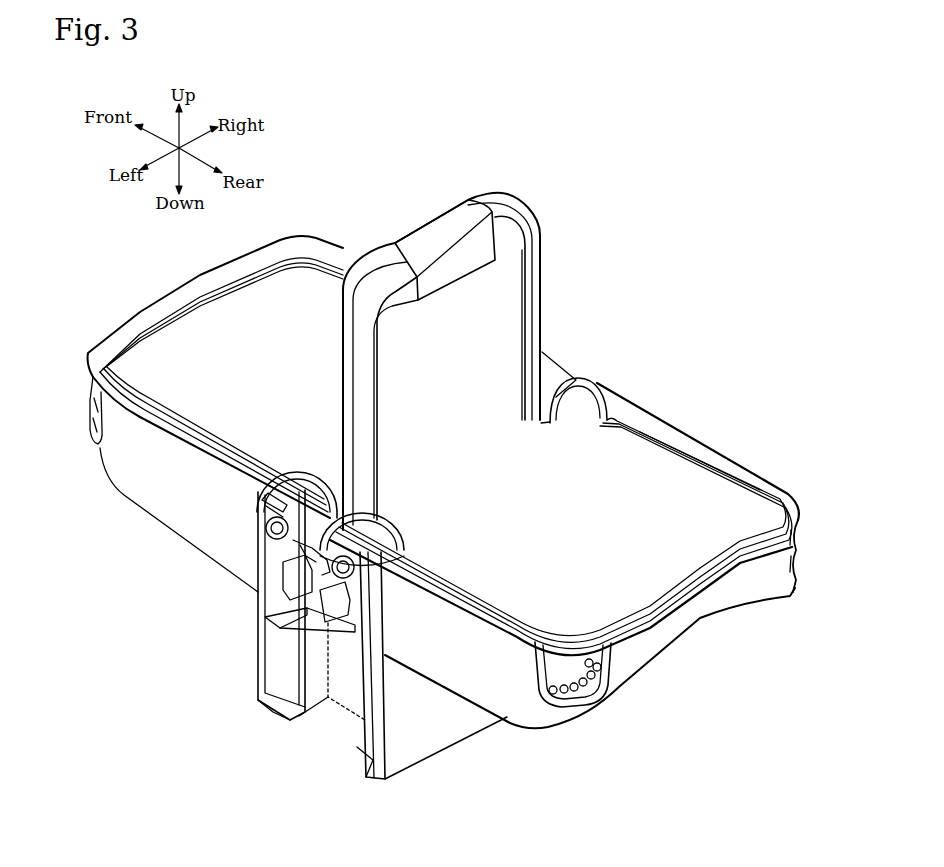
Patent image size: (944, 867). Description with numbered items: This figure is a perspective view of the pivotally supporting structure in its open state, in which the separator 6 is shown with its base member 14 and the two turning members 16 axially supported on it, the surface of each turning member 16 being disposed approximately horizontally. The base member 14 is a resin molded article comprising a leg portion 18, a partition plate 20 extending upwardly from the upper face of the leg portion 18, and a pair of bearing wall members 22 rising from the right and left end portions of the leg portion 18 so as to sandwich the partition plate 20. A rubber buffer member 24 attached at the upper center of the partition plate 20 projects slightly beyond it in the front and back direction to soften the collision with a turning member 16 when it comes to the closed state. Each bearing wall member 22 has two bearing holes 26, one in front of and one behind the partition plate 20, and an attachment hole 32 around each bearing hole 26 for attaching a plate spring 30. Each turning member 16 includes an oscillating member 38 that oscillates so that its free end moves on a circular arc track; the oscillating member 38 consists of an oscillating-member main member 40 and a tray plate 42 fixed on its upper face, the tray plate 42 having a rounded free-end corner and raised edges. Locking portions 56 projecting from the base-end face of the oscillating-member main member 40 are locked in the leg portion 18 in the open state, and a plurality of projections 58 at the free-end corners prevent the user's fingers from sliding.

The separator 6 is at (547, 131).
The base member 14 is at (541, 262).
The turning member 16 is at (650, 407).
The leg portion 18 is at (413, 753).
The partition plate 20 is at (500, 320).
The bearing wall member 22 is at (262, 510).
The buffer member 24 is at (448, 220).
The bearing hole 26 is at (266, 530).
The plate spring 30 is at (272, 553).
The attachment hole 32 is at (290, 548).
The oscillating member 38 is at (803, 413).
The oscillating-member main member 40 is at (774, 567).
The tray plate 42 is at (712, 490).
The locking portion 56 is at (368, 652).
The projection 58 is at (582, 692).